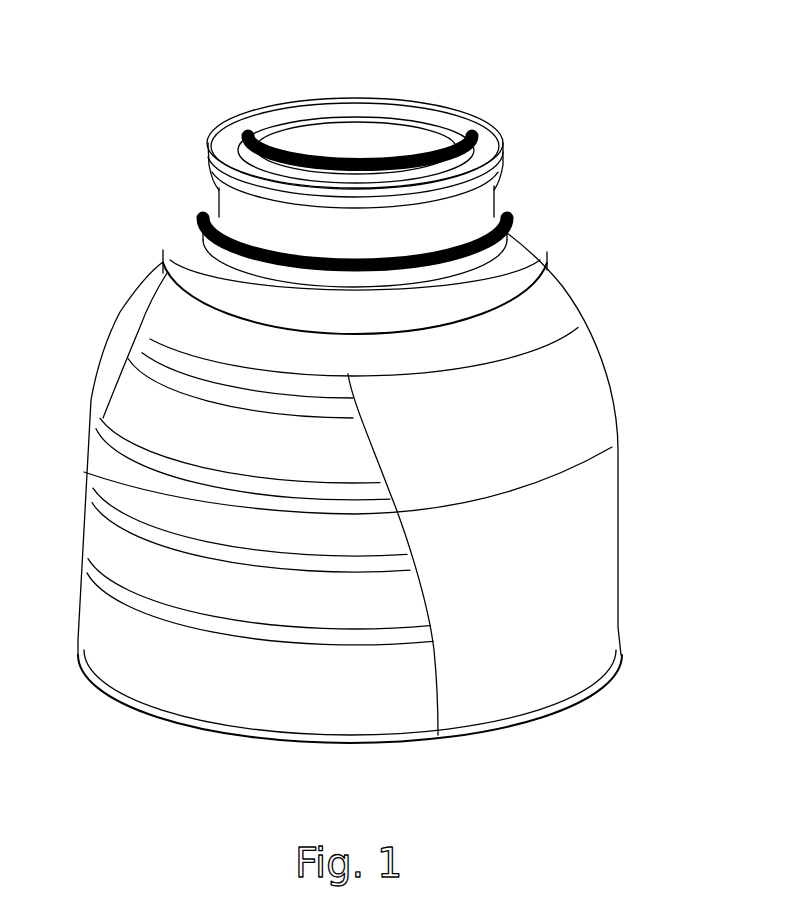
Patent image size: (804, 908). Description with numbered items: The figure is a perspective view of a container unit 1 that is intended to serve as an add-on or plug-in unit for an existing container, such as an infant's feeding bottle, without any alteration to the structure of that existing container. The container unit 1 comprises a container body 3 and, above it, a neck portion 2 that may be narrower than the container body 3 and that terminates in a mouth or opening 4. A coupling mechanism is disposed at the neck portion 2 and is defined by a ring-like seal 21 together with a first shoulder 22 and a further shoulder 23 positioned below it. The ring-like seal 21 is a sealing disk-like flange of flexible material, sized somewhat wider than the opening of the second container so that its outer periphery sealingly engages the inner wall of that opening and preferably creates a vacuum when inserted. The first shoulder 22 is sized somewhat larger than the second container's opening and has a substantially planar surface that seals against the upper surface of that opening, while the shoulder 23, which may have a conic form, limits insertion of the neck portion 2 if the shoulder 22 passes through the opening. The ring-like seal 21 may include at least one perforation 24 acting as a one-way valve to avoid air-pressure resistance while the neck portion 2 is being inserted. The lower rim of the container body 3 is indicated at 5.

The container unit 1 is at (680, 108).
The neck portion 2 is at (207, 190).
The container body 3 is at (603, 362).
The mouth or opening 4 is at (323, 127).
The base ring 5 is at (136, 718).
The ring-like seal 21 is at (213, 142).
The first shoulder 22 is at (205, 218).
The shoulder 23 is at (190, 260).
The perforation (one-way valve) 24 is at (414, 114).